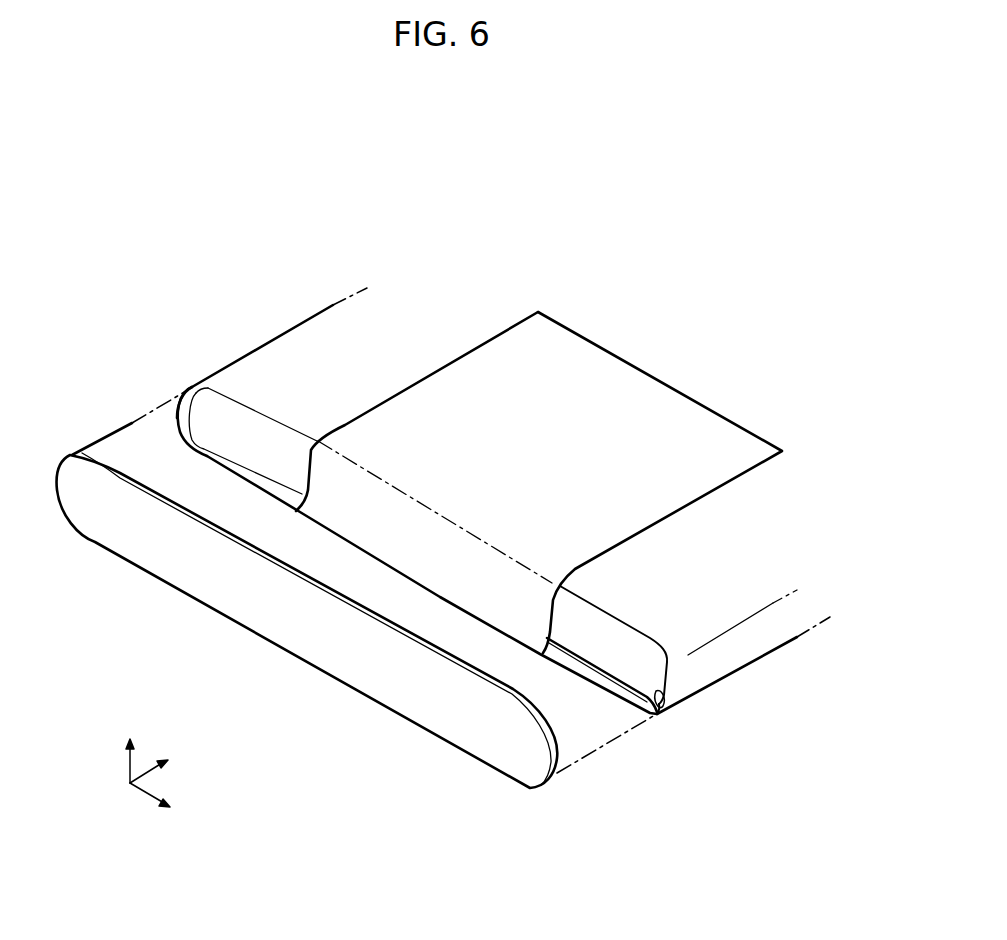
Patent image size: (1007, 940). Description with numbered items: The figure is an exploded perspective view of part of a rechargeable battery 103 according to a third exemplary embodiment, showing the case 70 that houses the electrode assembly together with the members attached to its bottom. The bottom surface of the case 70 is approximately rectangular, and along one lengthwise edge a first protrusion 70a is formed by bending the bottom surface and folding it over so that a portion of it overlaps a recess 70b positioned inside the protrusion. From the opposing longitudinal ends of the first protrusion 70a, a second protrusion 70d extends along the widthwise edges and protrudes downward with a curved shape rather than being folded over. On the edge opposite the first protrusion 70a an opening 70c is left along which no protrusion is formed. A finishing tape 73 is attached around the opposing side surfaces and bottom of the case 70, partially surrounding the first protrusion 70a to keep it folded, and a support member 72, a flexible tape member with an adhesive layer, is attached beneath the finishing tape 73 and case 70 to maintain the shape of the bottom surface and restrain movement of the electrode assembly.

The rechargeable battery 103 is at (465, 229).
The case 70 is at (451, 528).
The first protrusion 70a is at (613, 688).
The recess 70b is at (652, 657).
The opening 70c is at (257, 407).
The second protrusion 70d is at (183, 412).
The support member 72 is at (223, 600).
The finishing tape 73 is at (650, 509).